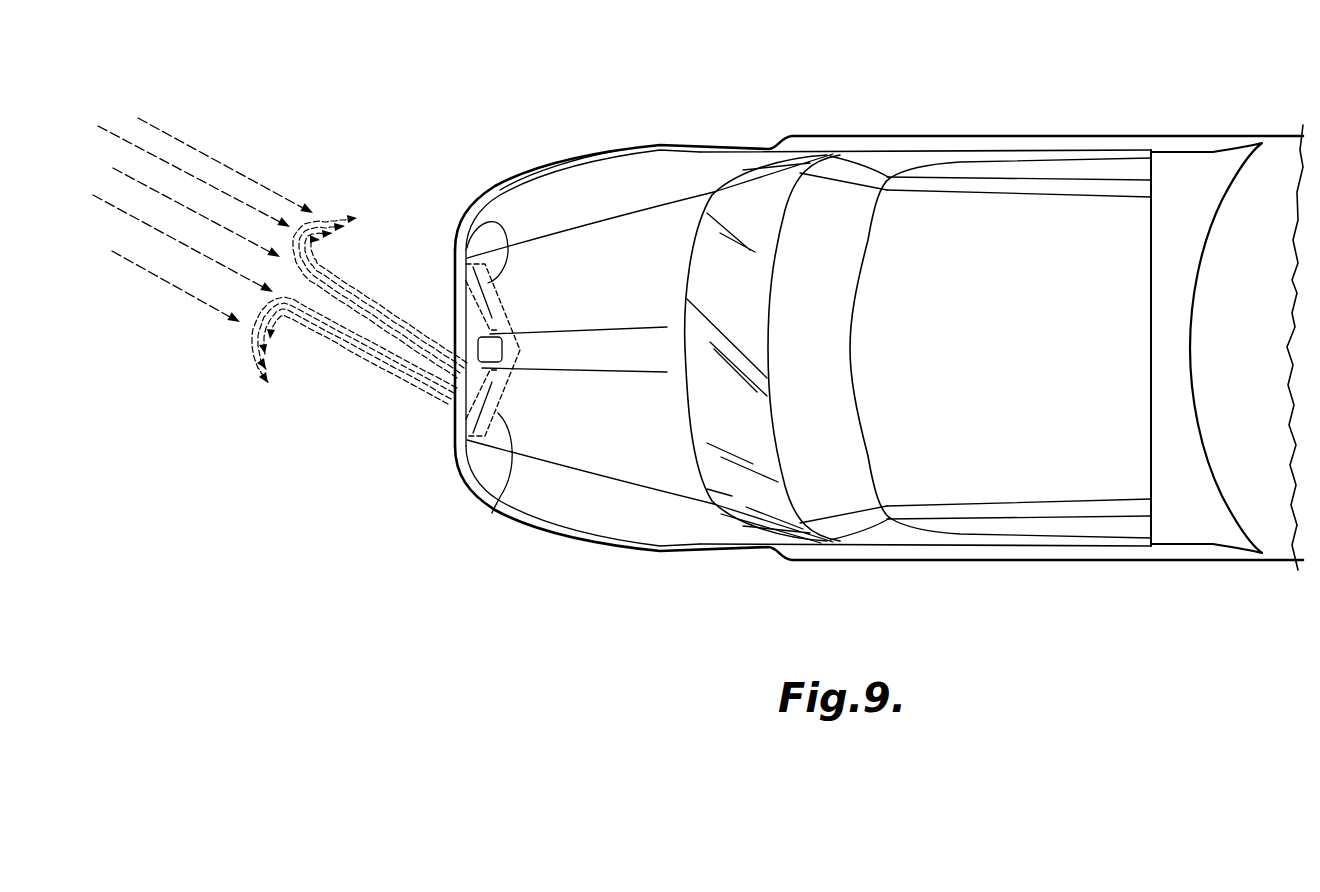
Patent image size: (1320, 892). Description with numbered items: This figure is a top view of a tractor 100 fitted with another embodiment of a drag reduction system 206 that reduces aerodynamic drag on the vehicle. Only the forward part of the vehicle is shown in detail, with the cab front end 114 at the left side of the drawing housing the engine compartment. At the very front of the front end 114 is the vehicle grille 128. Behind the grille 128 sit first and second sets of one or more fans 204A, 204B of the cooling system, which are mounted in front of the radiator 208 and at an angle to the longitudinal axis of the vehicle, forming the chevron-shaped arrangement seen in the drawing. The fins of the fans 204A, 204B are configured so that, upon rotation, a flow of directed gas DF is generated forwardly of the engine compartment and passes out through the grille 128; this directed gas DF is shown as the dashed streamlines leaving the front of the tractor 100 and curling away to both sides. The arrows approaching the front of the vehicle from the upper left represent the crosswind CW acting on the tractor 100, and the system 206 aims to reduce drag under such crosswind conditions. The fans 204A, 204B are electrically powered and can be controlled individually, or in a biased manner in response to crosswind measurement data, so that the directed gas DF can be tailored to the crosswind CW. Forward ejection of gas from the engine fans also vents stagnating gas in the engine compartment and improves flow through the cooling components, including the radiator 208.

The tractor 100 is at (990, 130).
The front end 114 is at (593, 148).
The vehicle grille 128 is at (453, 271).
The first set of one or more fans 204A is at (467, 302).
The second set of one or more fans 204B is at (467, 400).
The drag reduction system 206 is at (489, 283).
The radiator 208 is at (492, 513).
The crosswind CW is at (193, 152).
The directed gas flow DF is at (302, 337).